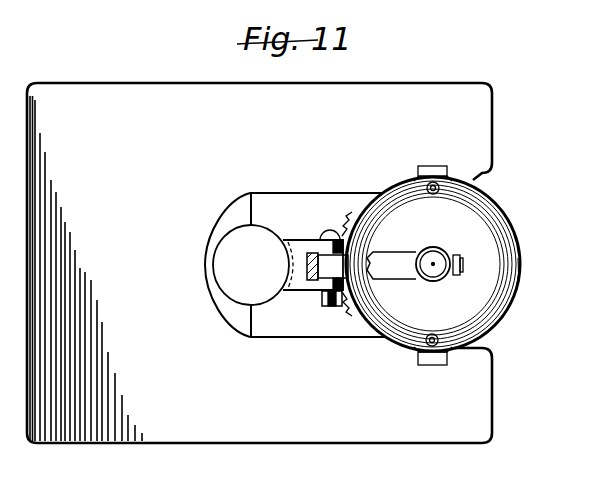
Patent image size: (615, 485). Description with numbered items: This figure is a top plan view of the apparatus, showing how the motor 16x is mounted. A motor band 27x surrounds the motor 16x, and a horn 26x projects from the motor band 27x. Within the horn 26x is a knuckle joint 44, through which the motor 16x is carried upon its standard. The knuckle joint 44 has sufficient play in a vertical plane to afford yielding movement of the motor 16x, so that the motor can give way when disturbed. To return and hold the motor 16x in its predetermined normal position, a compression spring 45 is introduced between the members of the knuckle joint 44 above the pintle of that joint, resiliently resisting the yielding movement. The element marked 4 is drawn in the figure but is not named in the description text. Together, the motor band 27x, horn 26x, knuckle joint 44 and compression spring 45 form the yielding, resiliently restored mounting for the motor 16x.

The bracket arm 4 is at (332, 210).
The horn 26x is at (235, 250).
The compression spring 45 is at (313, 253).
The knuckle joint 44 is at (326, 305).
The motor 16x is at (473, 242).
The motor band 27x is at (518, 272).